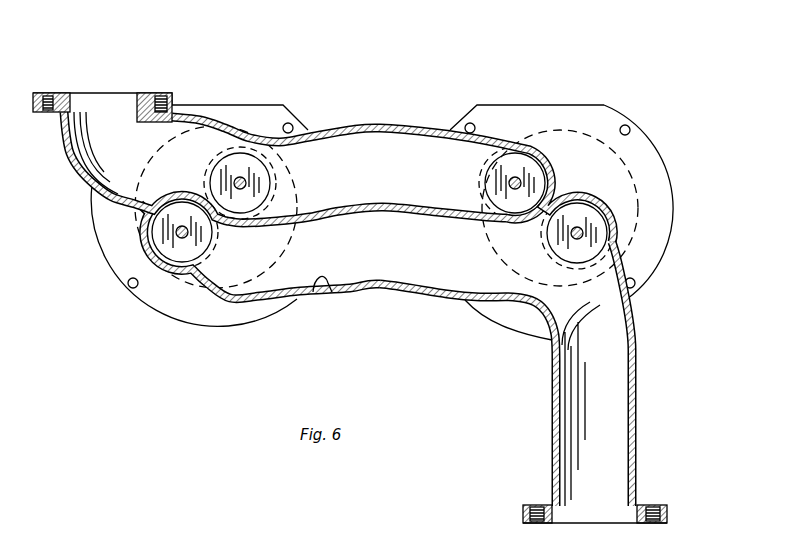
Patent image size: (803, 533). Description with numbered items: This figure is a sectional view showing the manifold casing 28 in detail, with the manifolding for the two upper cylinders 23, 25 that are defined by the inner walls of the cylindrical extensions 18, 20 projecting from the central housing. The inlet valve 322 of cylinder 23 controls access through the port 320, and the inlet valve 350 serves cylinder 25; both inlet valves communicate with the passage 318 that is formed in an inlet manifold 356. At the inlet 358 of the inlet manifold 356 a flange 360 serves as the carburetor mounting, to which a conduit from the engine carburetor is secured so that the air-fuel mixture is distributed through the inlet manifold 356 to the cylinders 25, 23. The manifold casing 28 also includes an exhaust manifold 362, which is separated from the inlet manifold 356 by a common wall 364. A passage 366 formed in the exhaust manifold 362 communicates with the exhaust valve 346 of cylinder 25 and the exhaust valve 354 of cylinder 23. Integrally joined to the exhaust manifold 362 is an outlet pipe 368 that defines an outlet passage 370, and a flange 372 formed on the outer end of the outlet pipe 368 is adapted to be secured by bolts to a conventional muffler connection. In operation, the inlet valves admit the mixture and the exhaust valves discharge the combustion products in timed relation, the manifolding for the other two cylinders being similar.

The cylindrical extension 18 is at (662, 197).
The cylindrical extension 20 is at (100, 252).
The cylinder 23 is at (658, 138).
The cylinder 25 is at (216, 292).
The manifold casing 28 is at (217, 116).
The passage 318 is at (326, 132).
The port 320 is at (468, 210).
The valve 322 is at (537, 147).
The exhaust valve 346 is at (203, 245).
The inlet valve 350 is at (270, 187).
The exhaust valve 354 is at (588, 220).
The inlet manifold 356 is at (403, 127).
The inlet 358 is at (70, 120).
The flange 360 is at (145, 93).
The exhaust manifold 362 is at (452, 298).
The common wall 364 is at (358, 219).
The passage 366 is at (303, 297).
The outlet pipe 368 is at (637, 373).
The outlet passage 370 is at (562, 421).
The flange 372 is at (653, 507).